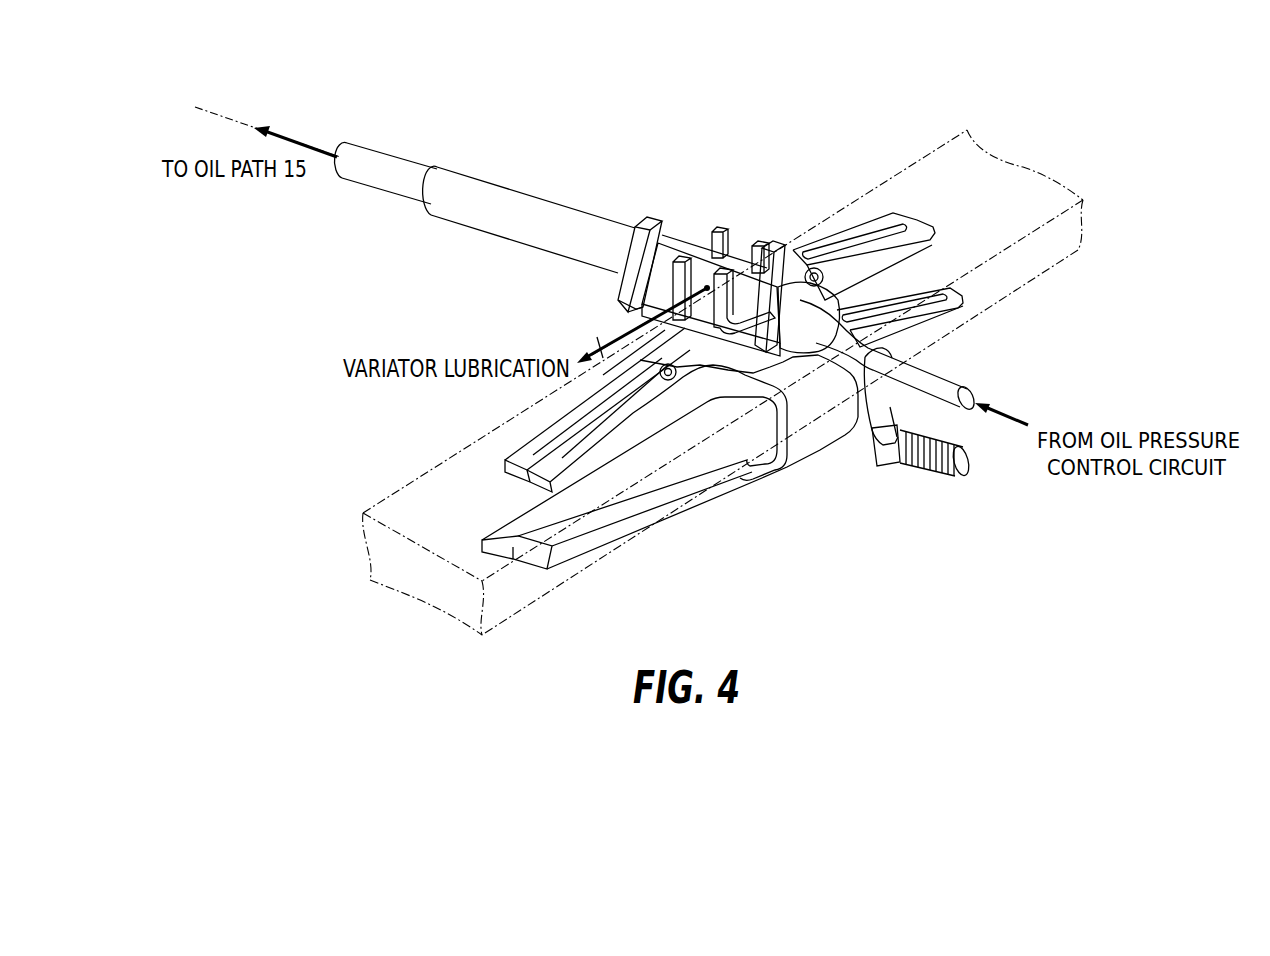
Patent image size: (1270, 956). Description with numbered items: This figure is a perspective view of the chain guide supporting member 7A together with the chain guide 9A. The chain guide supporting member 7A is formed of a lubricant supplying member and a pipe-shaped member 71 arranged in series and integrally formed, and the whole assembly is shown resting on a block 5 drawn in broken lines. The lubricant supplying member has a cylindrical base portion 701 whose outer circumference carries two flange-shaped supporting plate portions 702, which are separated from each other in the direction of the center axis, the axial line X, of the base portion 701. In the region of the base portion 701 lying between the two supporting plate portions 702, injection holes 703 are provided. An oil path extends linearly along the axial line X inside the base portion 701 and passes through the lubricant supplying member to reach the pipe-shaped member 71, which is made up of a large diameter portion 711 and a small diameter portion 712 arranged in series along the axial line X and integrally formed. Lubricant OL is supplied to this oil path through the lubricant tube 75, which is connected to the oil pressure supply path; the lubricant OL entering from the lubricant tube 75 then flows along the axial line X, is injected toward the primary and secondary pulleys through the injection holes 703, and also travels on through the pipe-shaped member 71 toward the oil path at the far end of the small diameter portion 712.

The transmission case / block 5 is at (365, 555).
The pipe-shaped member 71 is at (513, 93).
The small diameter portion 712 is at (415, 172).
The large diameter portion 711 is at (480, 182).
The supporting plate portion 702 is at (640, 222).
The injection hole 703 is at (705, 282).
The base portion 701 is at (740, 277).
The chain guide supporting member 7A is at (414, 299).
The chain guide 9A is at (783, 497).
The lubricant tube 75 is at (930, 362).
The lubricant OL is at (297, 138).
The axial line X is at (256, 120).